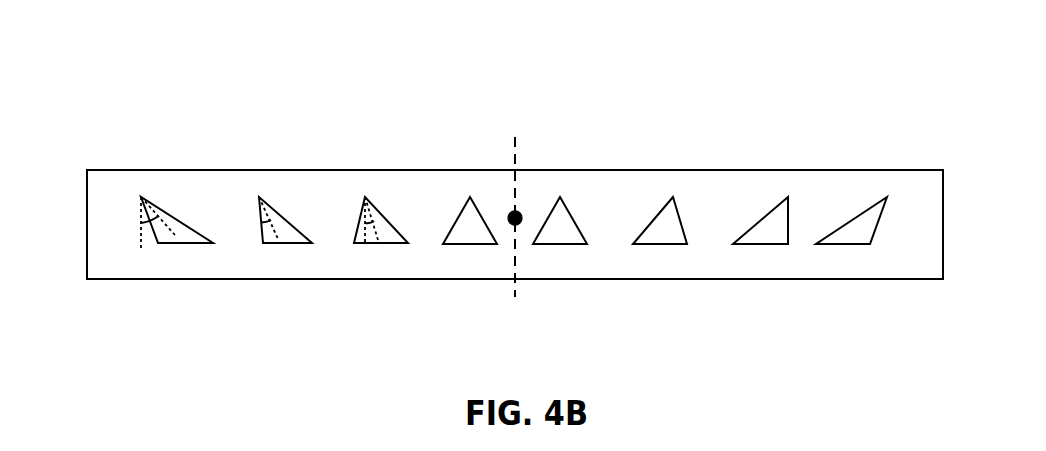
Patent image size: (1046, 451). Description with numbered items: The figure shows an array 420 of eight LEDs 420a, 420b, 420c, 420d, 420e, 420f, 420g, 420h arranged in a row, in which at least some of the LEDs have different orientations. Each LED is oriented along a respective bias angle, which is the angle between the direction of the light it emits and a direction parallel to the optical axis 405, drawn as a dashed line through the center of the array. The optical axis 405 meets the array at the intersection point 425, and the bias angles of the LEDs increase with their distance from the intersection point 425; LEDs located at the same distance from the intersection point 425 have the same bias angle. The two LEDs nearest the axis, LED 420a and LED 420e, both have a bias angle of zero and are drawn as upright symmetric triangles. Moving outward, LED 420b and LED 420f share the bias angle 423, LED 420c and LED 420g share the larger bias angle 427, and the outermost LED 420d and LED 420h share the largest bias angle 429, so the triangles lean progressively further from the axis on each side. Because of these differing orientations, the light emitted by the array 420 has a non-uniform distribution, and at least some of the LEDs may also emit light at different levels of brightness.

The array of LEDs 420 is at (125, 61).
The LED 420a is at (457, 207).
The LED 420b is at (380, 205).
The LED 420c is at (278, 205).
The LED 420d is at (166, 203).
The LED 420e is at (574, 210).
The LED 420f is at (680, 215).
The LED 420g is at (762, 222).
The LED 420h is at (851, 228).
The optical axis 405 is at (493, 132).
The intersection point 425 is at (519, 223).
The bias angle 423 is at (367, 225).
The bias angle 427 is at (263, 225).
The bias angle 429 is at (152, 225).